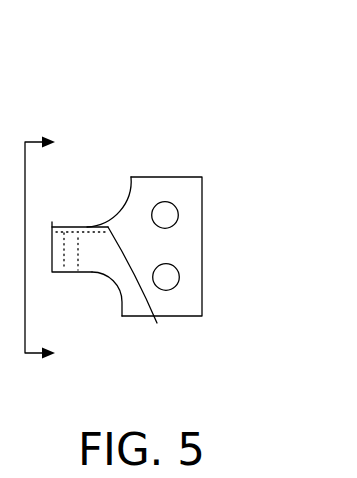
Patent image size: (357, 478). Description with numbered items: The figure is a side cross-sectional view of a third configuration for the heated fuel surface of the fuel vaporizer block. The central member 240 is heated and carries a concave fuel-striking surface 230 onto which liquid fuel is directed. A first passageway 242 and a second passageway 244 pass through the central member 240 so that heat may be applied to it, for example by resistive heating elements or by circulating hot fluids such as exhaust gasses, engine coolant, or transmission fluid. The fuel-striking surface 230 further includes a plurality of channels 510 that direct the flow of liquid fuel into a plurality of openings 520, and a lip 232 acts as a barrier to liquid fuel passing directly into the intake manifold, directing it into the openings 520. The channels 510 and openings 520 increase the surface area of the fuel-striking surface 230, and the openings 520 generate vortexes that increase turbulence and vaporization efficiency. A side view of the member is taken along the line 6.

The section line 6— 6 is at (54, 247).
The fuel-striking surface 230 is at (92, 211).
The lip 232 is at (52, 222).
The central member 240 is at (222, 147).
The first passageway 242 is at (178, 215).
The second passageway 244 is at (179, 277).
The channels 510 is at (144, 295).
The openings 520 is at (78, 247).